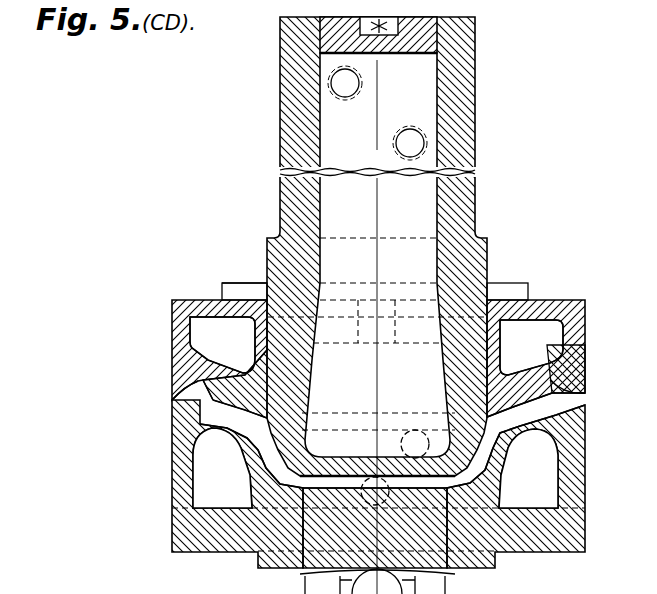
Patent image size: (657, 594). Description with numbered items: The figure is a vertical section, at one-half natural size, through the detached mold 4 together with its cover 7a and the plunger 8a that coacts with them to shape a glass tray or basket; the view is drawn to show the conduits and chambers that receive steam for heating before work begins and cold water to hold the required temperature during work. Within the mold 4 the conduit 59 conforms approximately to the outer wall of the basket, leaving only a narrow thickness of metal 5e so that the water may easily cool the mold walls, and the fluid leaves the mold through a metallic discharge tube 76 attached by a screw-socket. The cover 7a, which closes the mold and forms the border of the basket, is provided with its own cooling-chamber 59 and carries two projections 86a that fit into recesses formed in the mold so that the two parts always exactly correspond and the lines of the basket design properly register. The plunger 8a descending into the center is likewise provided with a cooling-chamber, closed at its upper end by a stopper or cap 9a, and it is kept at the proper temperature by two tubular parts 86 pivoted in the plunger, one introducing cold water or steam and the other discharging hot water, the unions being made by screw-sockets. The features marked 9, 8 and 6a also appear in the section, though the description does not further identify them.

The plunger 8a is at (281, 128).
The stopper or cap 9a is at (412, 28).
The cap plug 9 is at (365, 29).
The tubular parts 86 is at (344, 100).
The conduit 59 is at (376, 296).
The cover 7a is at (195, 297).
The ledge 8 is at (266, 262).
The mold 4 is at (172, 432).
The narrow thickness of metal 5e is at (250, 482).
The projections 86a is at (172, 389).
The discharge tube 76 is at (400, 445).
The lower body 6a is at (368, 581).